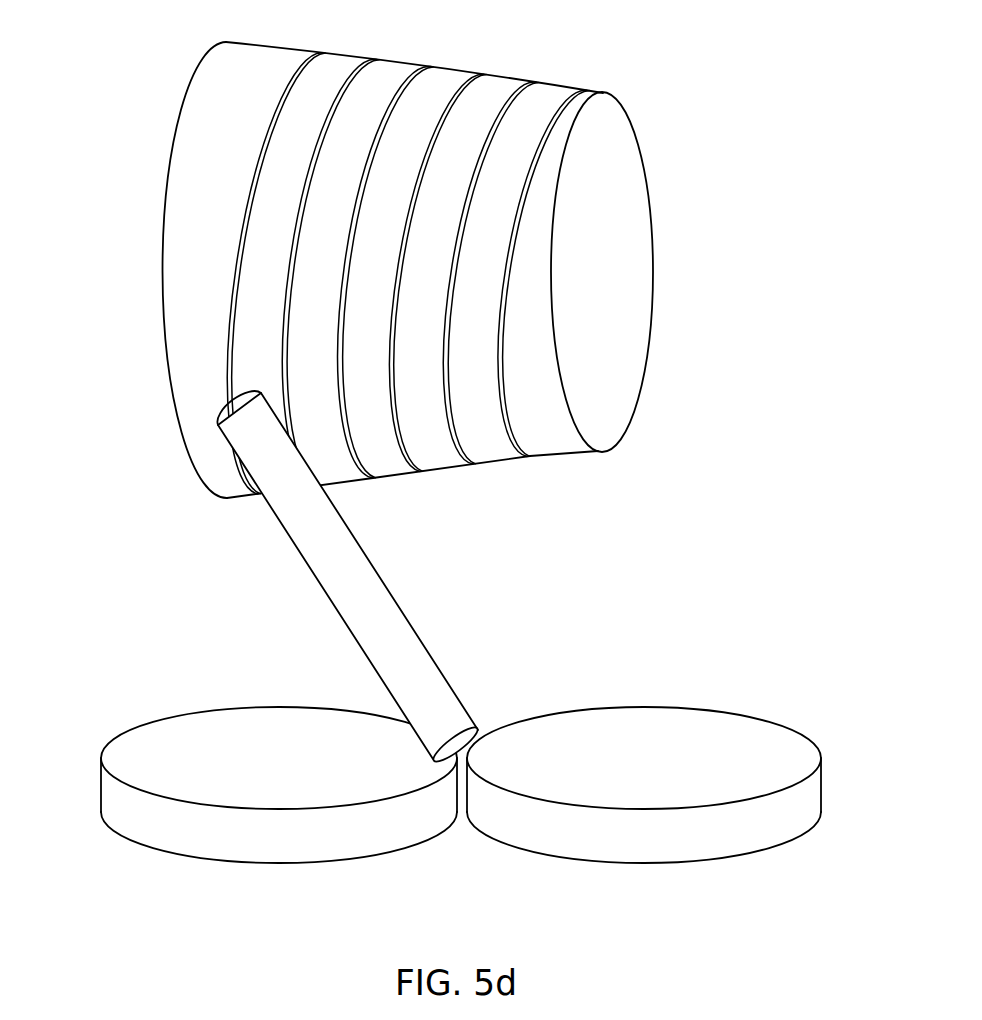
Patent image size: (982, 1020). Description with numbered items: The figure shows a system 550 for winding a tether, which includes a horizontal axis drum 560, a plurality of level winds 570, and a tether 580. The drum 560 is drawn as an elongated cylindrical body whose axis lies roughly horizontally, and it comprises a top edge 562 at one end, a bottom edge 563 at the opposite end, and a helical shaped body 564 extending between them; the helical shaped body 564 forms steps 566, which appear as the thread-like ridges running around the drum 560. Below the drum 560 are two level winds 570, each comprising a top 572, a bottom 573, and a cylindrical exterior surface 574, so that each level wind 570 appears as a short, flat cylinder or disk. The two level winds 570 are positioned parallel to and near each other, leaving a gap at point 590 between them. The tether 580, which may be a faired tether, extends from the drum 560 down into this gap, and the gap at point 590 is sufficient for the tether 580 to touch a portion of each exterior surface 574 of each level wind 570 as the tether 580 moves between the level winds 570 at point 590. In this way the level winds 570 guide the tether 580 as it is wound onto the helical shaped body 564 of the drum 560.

The system for winding a tether 550 is at (774, 220).
The horizontal axis drum 560 is at (497, 450).
The top edge 562 is at (645, 385).
The bottom edge 563 is at (165, 177).
The helical shaped body 564 is at (404, 73).
The steps 566 is at (372, 62).
The level winds 570 is at (138, 740).
The top 572 is at (263, 720).
The bottom 573 is at (215, 858).
The cylindrical exterior surface 574 is at (113, 795).
The tether 580 is at (392, 615).
The point 590 is at (462, 826).